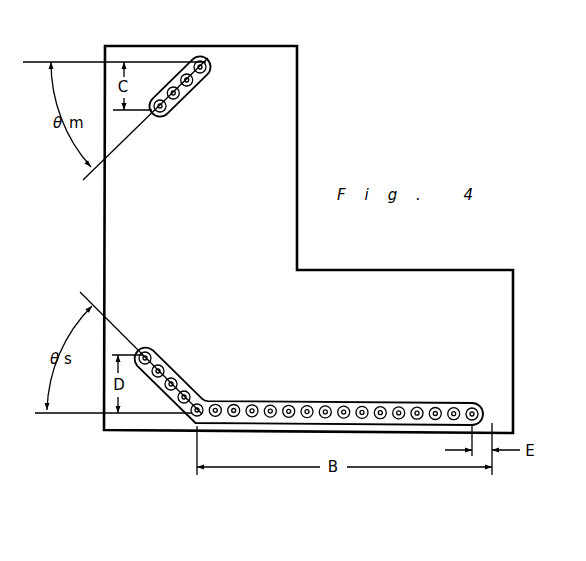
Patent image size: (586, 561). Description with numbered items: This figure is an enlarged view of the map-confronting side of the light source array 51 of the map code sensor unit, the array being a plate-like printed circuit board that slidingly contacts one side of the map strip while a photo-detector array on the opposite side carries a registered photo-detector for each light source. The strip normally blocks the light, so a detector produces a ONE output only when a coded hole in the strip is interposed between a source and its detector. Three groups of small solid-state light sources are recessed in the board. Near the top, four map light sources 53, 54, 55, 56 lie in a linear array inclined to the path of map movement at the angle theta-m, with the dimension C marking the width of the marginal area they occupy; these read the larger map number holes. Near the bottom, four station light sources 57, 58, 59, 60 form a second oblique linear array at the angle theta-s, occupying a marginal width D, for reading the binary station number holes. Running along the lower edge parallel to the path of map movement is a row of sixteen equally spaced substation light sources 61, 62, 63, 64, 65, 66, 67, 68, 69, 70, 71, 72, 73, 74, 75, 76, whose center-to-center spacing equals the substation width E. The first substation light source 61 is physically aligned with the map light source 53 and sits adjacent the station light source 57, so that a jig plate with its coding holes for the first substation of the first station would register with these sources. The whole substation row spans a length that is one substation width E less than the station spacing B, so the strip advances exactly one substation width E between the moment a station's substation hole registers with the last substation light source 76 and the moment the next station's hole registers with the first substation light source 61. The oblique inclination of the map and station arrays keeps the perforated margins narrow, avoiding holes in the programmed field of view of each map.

The light source array 51 is at (494, 270).
The map light source 53 is at (207, 66).
The map light source 54 is at (192, 82).
The map light source 55 is at (178, 96).
The map light source 56 is at (163, 112).
The station light source 57 is at (189, 392).
The station light source 58 is at (176, 378).
The station light source 59 is at (161, 365).
The station light source 60 is at (147, 351).
The substation light source 61 is at (194, 417).
The substation light source 62 is at (215, 417).
The substation light source 63 is at (234, 404).
The substation light source 64 is at (252, 417).
The substation light source 65 is at (270, 405).
The substation light source 66 is at (289, 417).
The substation light source 67 is at (307, 405).
The substation light source 68 is at (325, 418).
The substation light source 69 is at (343, 406).
The substation light source 70 is at (362, 418).
The substation light source 71 is at (380, 406).
The substation light source 72 is at (399, 419).
The substation light source 73 is at (417, 407).
The substation light source 74 is at (436, 407).
The substation light source 75 is at (455, 408).
The substation light source 76 is at (478, 408).